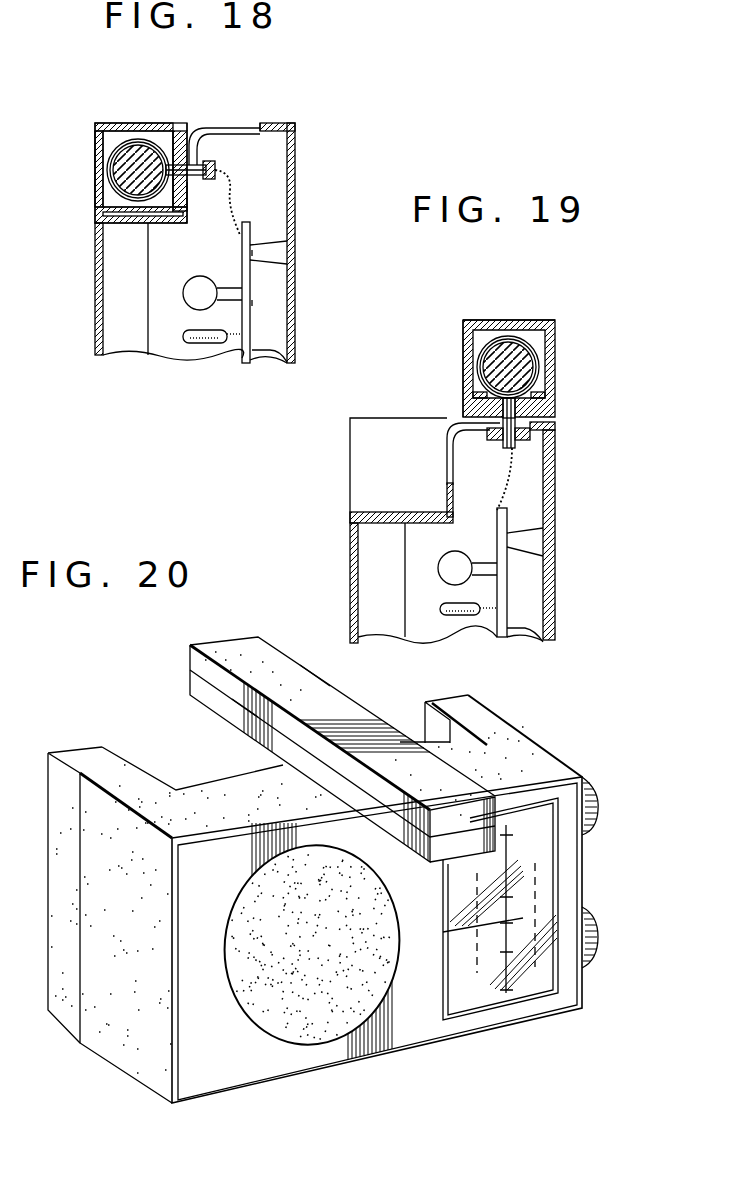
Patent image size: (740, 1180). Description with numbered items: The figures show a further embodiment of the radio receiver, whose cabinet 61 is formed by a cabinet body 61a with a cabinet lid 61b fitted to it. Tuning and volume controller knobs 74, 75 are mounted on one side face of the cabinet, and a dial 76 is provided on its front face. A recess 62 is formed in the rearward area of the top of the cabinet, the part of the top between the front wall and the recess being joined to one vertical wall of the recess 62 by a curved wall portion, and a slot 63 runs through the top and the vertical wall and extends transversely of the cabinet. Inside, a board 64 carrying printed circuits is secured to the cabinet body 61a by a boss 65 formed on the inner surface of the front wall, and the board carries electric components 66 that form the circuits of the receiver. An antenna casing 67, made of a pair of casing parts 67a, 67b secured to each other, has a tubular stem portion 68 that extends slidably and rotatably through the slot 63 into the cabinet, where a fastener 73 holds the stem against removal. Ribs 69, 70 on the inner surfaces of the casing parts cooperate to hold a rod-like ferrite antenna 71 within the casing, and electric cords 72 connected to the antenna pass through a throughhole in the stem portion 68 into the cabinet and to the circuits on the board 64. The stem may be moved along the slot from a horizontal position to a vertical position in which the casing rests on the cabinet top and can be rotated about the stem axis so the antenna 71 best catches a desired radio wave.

In FIG. 18, the cabinet 61 is at (165, 356).
In FIG. 19, the cabinet 61 is at (411, 637).
In FIG. 20, the cabinet 61 is at (328, 1060).
In FIG. 18, the cabinet body 61a is at (295, 172).
In FIG. 19, the cabinet body 61a is at (556, 612).
In FIG. 20, the cabinet body 61a is at (127, 1060).
In FIG. 18, the cabinet lid 61b is at (95, 262).
In FIG. 19, the cabinet lid 61b is at (351, 590).
In FIG. 20, the cabinet lid 61b is at (65, 1015).
In FIG. 18, the recess 62 is at (192, 130).
In FIG. 19, the recess 62 is at (362, 484).
In FIG. 20, the recess 62 is at (180, 770).
In FIG. 18, the slot 63 is at (245, 128).
In FIG. 19, the slot 63 is at (425, 473).
In FIG. 18, the board 64 is at (252, 356).
In FIG. 19, the board 64 is at (510, 637).
In FIG. 18, the boss 65 is at (275, 268).
In FIG. 19, the boss 65 is at (533, 553).
In FIG. 18, the electric components 66 is at (185, 337).
In FIG. 19, the electric components 66 is at (441, 608).
In FIG. 18, the antenna casing 67 is at (146, 123).
In FIG. 19, the antenna casing 67 is at (556, 376).
In FIG. 20, the antenna casing 67 is at (233, 643).
In FIG. 18, the casing part 67a is at (178, 123).
In FIG. 19, the casing part 67a is at (466, 372).
In FIG. 20, the casing part 67a is at (240, 717).
In FIG. 18, the casing part 67b is at (95, 134).
In FIG. 19, the casing part 67b is at (497, 338).
In FIG. 20, the casing part 67b is at (332, 688).
In FIG. 18, the tubular stem portion 68 is at (204, 223).
In FIG. 19, the rib 69 is at (477, 398).
In FIG. 18, the rib 70 is at (110, 170).
In FIG. 19, the rib 70 is at (500, 331).
In FIG. 18, the ferrite antenna 71 is at (122, 140).
In FIG. 19, the ferrite antenna 71 is at (538, 350).
In FIG. 18, the electric cords 72 is at (236, 212).
In FIG. 19, the electric cords 72 is at (500, 472).
In FIG. 18, the fastener 73 is at (215, 162).
In FIG. 19, the fastener 73 is at (488, 441).
In FIG. 20, the tuning controller knob 74 is at (597, 812).
In FIG. 20, the volume controller knob 75 is at (597, 937).
In FIG. 20, the dial 76 is at (518, 995).